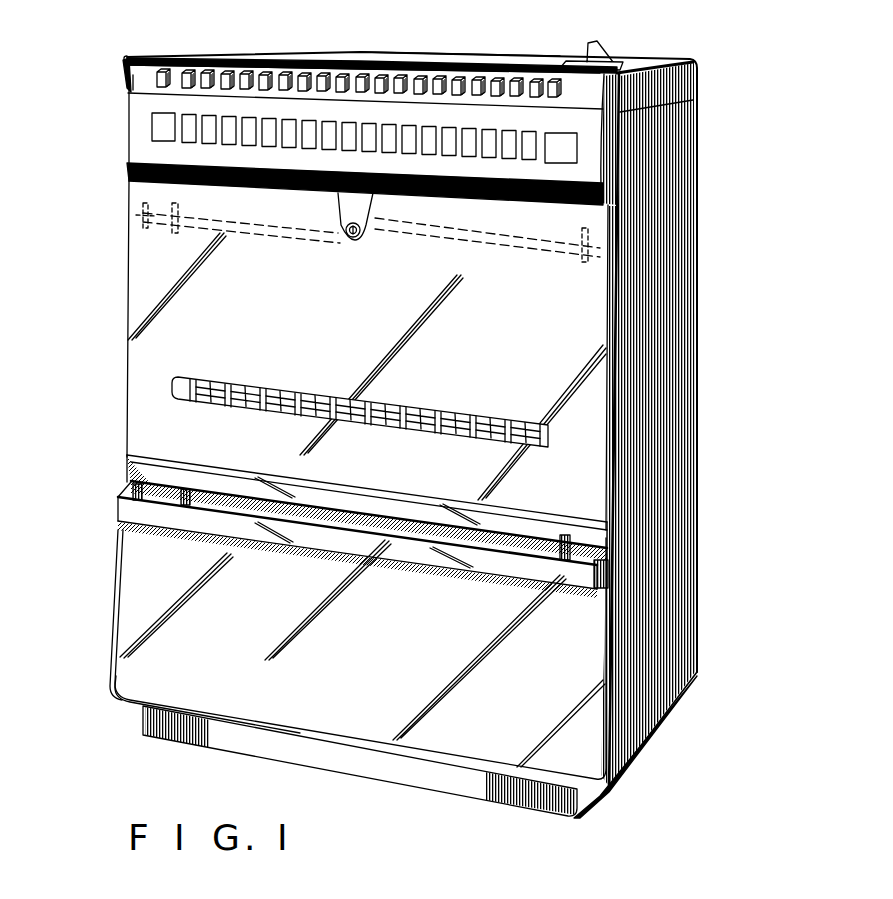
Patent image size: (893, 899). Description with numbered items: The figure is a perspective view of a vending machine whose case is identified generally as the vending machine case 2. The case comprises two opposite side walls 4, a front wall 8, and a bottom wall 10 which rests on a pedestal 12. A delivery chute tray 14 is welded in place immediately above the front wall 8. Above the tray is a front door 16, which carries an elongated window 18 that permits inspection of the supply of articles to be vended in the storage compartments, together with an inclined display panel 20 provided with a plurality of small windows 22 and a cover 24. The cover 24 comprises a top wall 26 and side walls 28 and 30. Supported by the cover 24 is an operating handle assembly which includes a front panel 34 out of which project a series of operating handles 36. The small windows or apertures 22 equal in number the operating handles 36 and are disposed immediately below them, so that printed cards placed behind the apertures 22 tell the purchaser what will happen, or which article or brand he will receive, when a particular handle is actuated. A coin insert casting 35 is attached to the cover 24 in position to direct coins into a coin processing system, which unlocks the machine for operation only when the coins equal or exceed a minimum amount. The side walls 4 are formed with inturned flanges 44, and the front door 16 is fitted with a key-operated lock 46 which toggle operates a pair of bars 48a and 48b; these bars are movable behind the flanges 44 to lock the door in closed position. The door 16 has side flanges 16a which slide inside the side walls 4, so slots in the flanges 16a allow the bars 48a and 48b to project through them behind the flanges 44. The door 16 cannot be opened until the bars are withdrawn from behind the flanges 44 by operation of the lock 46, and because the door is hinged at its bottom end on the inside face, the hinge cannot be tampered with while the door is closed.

The vending machine case 2 is at (88, 279).
The side walls 4 is at (117, 572).
The front wall 8 is at (140, 658).
The bottom wall 10 is at (127, 698).
The pedestal 12 is at (143, 733).
The delivery chute tray 14 is at (125, 506).
The front door 16 is at (155, 352).
The side flanges 16a is at (612, 313).
The elongated window 18 is at (173, 388).
The inclined display panel 20 is at (133, 124).
The small windows 22 is at (182, 134).
The cover 24 is at (527, 52).
The top wall 26 is at (378, 57).
The side wall 28 is at (695, 83).
The side wall 30 is at (124, 72).
The front panel 34 is at (141, 70).
The coin insert casting 35 is at (599, 57).
The operating handles 36 is at (207, 78).
The inturned flanges 44 is at (147, 229).
The key-operated lock 46 is at (370, 218).
The bar 48a is at (458, 232).
The bar 48b is at (284, 241).